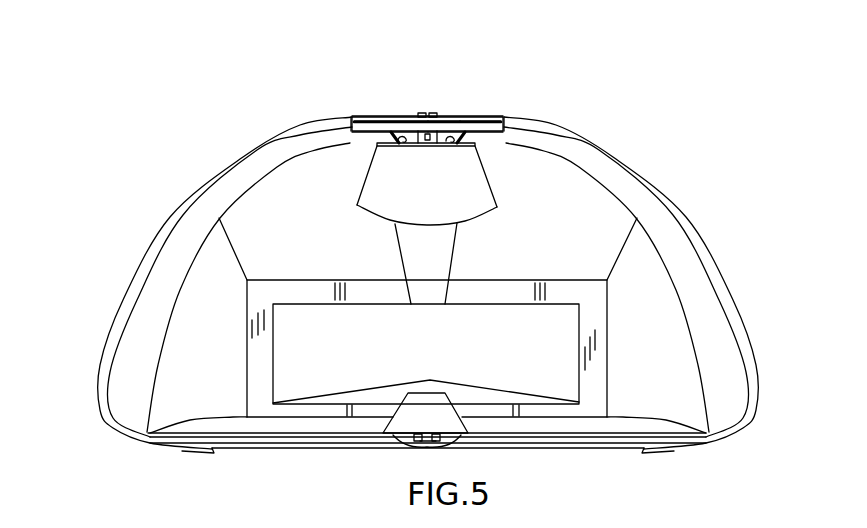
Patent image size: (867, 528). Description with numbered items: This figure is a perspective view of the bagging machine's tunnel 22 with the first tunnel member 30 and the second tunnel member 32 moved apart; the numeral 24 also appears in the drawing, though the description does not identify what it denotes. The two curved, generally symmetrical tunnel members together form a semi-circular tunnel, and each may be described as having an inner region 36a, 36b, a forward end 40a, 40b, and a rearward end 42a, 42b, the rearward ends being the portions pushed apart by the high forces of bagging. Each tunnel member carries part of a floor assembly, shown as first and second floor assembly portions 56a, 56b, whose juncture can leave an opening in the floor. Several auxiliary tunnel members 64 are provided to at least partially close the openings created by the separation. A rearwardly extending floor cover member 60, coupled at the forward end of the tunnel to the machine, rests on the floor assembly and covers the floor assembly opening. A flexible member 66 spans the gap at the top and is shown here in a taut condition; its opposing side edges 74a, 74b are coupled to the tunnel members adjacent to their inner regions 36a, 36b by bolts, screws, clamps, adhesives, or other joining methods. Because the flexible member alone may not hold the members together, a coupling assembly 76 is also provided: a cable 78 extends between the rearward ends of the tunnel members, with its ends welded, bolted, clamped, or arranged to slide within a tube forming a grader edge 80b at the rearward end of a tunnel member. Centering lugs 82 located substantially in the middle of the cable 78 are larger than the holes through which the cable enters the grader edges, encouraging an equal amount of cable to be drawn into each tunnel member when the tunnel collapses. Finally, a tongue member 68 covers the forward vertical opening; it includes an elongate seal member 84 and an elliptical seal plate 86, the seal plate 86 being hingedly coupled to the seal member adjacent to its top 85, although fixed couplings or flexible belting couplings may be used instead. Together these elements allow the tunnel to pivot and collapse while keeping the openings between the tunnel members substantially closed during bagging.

The tunnel 22 is at (694, 72).
The housing 24 is at (692, 108).
The first tunnel member 30 is at (205, 191).
The second tunnel member 32 is at (705, 236).
The inner region of first tunnel member 36a is at (344, 104).
The inner region of second tunnel member 36b is at (519, 105).
The forward end of first tunnel member 40a is at (303, 257).
The forward end of second tunnel member 40b is at (572, 257).
The rearward end of first tunnel member 42a is at (126, 311).
The rearward end of second tunnel member 42b is at (738, 333).
The first floor assembly portion 56a is at (317, 420).
The second floor assembly portion 56b is at (547, 420).
The floor cover member 60 is at (437, 417).
The auxiliary tunnel member 64 is at (488, 143).
The flexible member 66 is at (449, 124).
The tongue member 68 is at (390, 221).
The first side edge of flexible member 74a is at (357, 117).
The second side edge of flexible member 74b is at (512, 112).
The coupling assembly 76 is at (423, 85).
The cable 78 is at (378, 117).
The grader edge 80b is at (622, 170).
The centering lugs 82 is at (437, 117).
The elongate seal member 84 is at (437, 260).
The top of elongate seal member 85 is at (376, 146).
The seal plate 86 is at (437, 207).